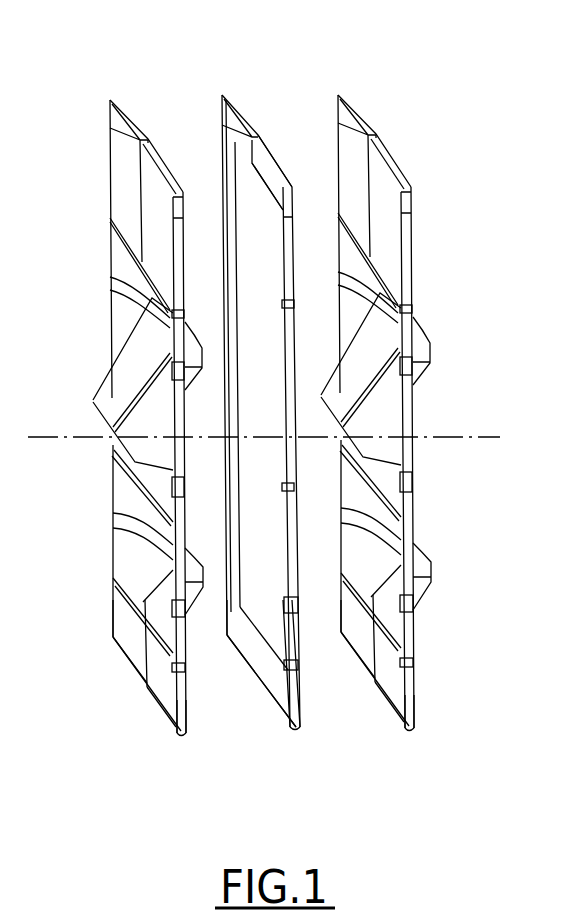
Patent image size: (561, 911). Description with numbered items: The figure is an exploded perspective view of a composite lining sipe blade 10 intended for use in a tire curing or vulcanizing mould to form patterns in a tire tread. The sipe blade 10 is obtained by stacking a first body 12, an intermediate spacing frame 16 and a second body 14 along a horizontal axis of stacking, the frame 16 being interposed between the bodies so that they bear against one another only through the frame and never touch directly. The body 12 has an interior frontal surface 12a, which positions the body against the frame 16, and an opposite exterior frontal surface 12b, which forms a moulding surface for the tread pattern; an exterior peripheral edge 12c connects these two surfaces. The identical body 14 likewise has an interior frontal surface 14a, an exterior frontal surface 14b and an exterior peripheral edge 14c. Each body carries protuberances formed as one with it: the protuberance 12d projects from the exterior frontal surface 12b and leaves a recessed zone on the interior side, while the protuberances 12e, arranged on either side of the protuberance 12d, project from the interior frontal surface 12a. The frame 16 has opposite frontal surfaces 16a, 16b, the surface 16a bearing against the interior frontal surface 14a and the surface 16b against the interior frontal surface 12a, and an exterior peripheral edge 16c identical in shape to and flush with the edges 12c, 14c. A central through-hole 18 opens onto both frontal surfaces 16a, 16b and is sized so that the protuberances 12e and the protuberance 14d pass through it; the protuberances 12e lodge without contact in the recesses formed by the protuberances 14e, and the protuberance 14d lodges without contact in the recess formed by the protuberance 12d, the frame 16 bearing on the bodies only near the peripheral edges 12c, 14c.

The composite lining sipe blade 10 is at (423, 70).
The first body 12 is at (112, 94).
The interior frontal surface 12a is at (191, 670).
The exterior frontal surface 12b is at (155, 685).
The exterior peripheral edge 12c is at (190, 714).
The protuberance 12d is at (96, 412).
The protuberances 12e is at (202, 350).
The second body 14 is at (341, 90).
The interior frontal surface 14a is at (385, 670).
The exterior frontal surface 14b is at (420, 677).
The exterior peripheral edge 14c is at (418, 712).
The protuberance 14d is at (368, 410).
The protuberances 14e is at (430, 351).
The intermediate spacing frame 16 is at (223, 88).
The frontal surface 16a is at (300, 698).
The frontal surface 16b is at (272, 683).
The exterior peripheral edge 16c is at (289, 240).
The central through-hole 18 is at (268, 518).